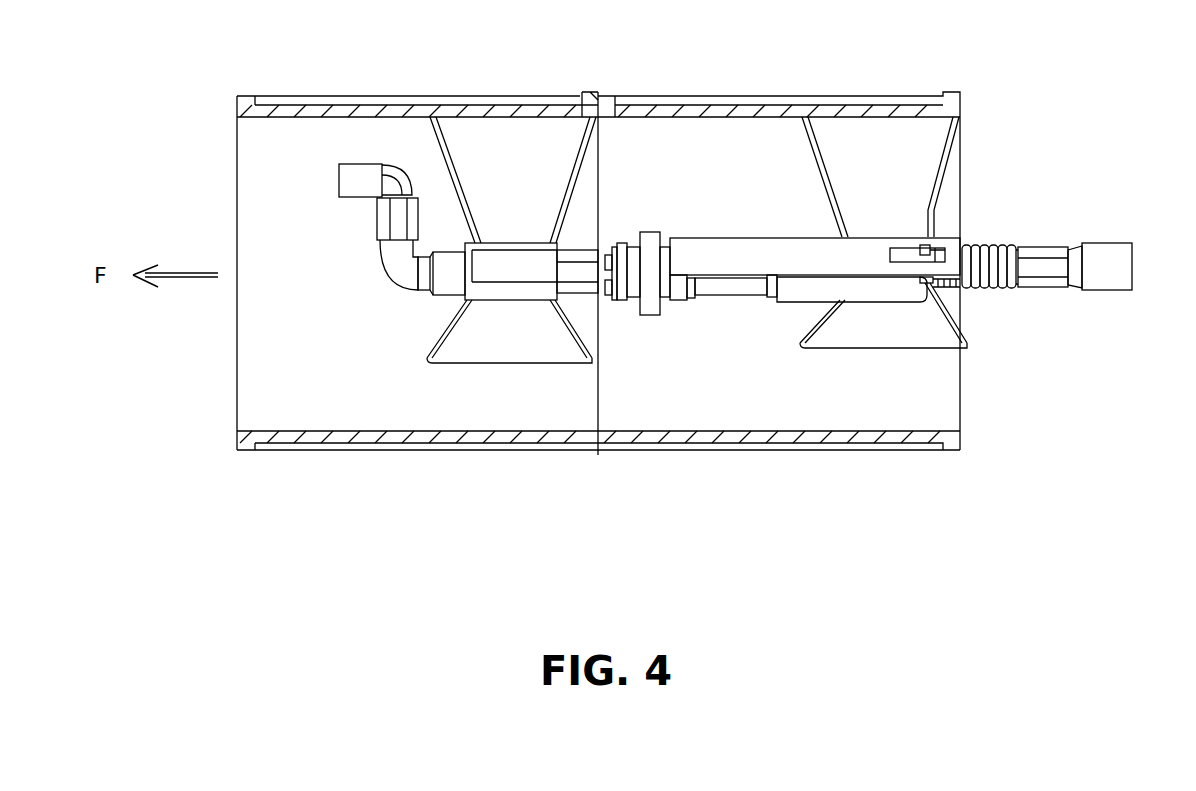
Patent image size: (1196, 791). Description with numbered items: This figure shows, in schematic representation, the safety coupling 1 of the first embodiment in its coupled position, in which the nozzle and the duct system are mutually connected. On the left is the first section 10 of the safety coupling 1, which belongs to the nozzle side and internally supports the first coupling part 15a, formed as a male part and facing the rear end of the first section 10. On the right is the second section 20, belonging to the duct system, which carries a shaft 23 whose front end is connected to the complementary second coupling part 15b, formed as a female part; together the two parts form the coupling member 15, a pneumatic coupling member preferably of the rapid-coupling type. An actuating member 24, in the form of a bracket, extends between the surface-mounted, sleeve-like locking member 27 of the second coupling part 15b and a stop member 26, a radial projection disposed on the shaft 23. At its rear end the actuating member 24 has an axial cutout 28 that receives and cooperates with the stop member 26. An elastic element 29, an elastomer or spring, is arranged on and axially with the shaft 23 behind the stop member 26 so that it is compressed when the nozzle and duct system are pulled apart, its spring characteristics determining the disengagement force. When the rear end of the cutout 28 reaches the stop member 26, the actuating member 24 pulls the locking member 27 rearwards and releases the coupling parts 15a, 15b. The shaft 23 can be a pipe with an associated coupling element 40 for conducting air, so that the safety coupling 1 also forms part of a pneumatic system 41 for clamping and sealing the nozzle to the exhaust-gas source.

The safety coupling 1 is at (598, 57).
The first section 10 is at (393, 97).
The second section 20 is at (747, 94).
The coupling member 15 is at (612, 305).
The first coupling part 15a is at (585, 253).
The second coupling part 15b is at (618, 247).
The locking member 27 is at (650, 233).
The actuating member 24 is at (730, 252).
The shaft 23 is at (795, 290).
The axial cutout 28 is at (915, 233).
The stop member 26 is at (927, 243).
The elastic element 29 is at (990, 246).
The coupling element 40 is at (395, 272).
The pneumatic system 41 is at (383, 222).